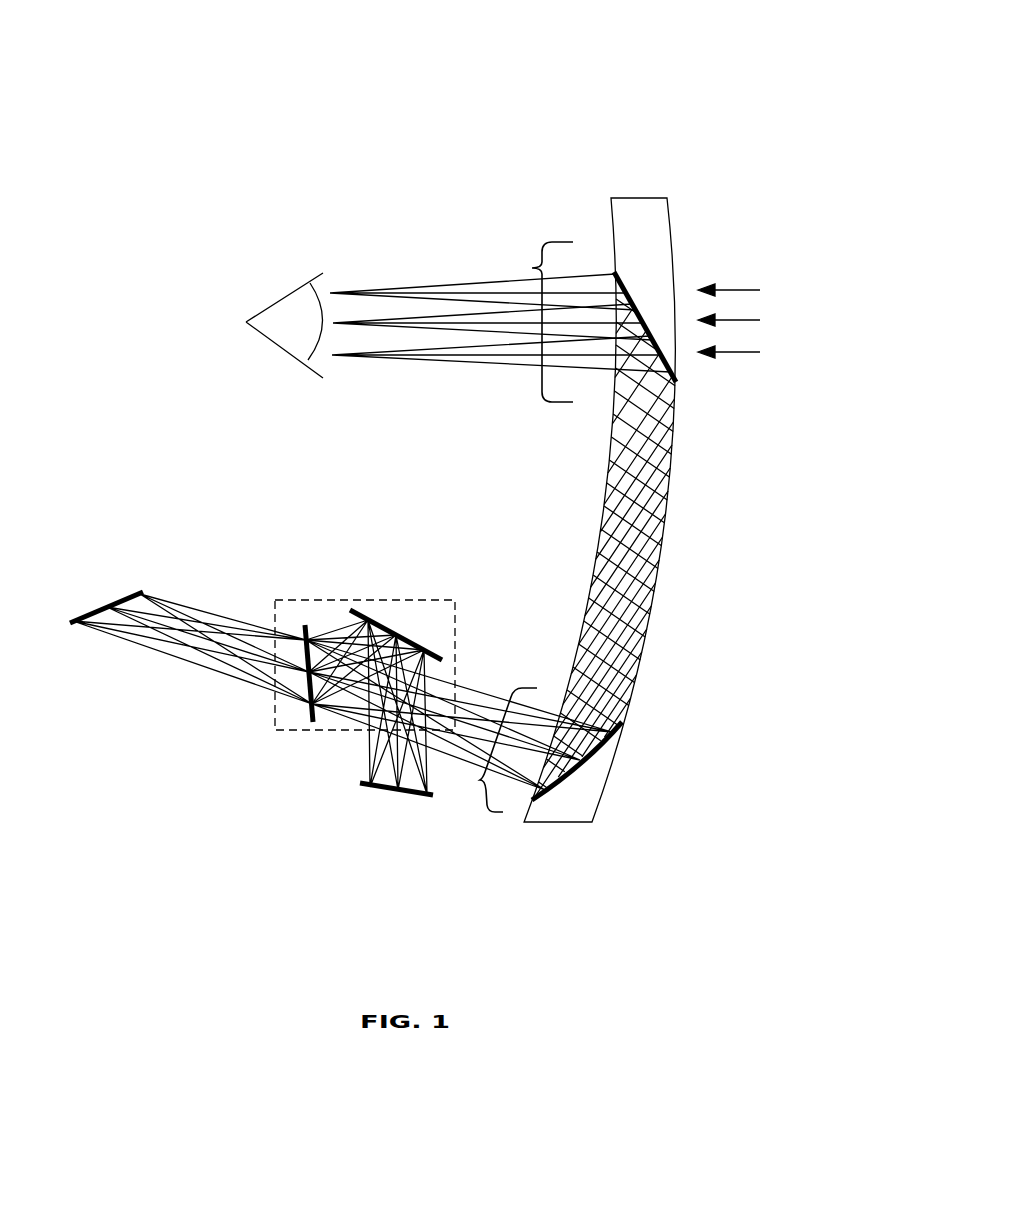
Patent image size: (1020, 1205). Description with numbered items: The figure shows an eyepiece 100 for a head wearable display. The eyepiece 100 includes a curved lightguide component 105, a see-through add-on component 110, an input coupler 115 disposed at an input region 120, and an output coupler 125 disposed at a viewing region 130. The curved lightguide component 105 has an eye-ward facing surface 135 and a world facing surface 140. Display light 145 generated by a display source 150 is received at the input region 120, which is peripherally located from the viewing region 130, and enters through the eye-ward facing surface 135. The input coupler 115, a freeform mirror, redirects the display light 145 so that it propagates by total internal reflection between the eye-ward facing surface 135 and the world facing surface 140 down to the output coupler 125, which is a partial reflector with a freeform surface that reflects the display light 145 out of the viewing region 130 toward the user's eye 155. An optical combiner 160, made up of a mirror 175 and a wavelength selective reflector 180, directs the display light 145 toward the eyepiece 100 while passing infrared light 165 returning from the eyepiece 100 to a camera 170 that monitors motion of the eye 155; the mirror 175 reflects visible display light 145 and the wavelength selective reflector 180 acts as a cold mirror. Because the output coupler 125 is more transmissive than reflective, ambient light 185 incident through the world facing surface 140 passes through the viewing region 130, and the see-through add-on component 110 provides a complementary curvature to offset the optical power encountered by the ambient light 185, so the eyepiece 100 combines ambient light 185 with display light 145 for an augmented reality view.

The eyepiece 100 is at (387, 95).
The curved lightguide component 105 is at (695, 642).
The see-through add-on component 110 is at (638, 198).
The input coupler 115 is at (600, 752).
The input region 120 is at (482, 778).
The output coupler 125 is at (627, 278).
The viewing region 130 is at (530, 268).
The eye-ward facing surface 135 is at (604, 491).
The world facing surface 140 is at (667, 513).
The display light 145 is at (370, 741).
The display source 150 is at (377, 793).
The eye 155 is at (305, 331).
The optical combiner 160 is at (318, 600).
The infrared light 165 is at (175, 607).
The camera 170 is at (143, 591).
The mirror 175 is at (400, 628).
The wavelength selective reflector 180 is at (305, 723).
The ambient light 185 is at (756, 318).